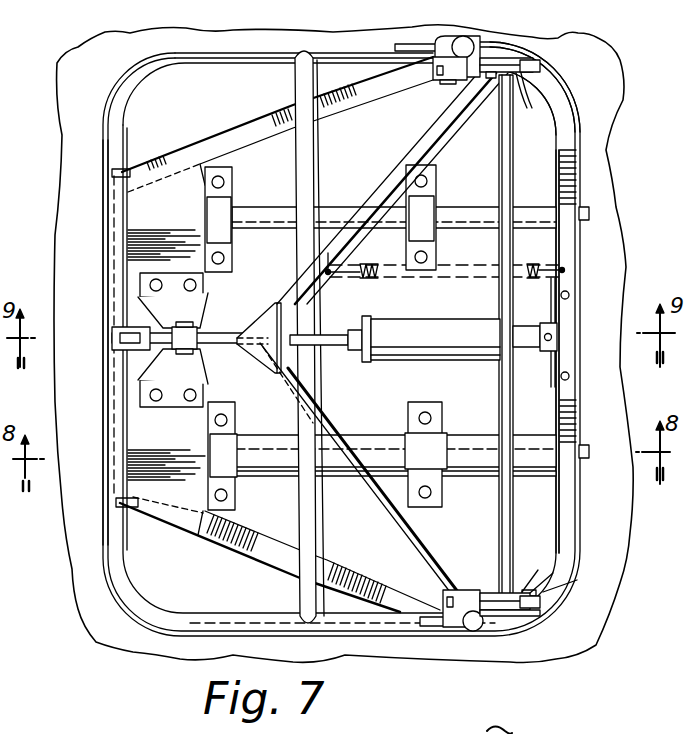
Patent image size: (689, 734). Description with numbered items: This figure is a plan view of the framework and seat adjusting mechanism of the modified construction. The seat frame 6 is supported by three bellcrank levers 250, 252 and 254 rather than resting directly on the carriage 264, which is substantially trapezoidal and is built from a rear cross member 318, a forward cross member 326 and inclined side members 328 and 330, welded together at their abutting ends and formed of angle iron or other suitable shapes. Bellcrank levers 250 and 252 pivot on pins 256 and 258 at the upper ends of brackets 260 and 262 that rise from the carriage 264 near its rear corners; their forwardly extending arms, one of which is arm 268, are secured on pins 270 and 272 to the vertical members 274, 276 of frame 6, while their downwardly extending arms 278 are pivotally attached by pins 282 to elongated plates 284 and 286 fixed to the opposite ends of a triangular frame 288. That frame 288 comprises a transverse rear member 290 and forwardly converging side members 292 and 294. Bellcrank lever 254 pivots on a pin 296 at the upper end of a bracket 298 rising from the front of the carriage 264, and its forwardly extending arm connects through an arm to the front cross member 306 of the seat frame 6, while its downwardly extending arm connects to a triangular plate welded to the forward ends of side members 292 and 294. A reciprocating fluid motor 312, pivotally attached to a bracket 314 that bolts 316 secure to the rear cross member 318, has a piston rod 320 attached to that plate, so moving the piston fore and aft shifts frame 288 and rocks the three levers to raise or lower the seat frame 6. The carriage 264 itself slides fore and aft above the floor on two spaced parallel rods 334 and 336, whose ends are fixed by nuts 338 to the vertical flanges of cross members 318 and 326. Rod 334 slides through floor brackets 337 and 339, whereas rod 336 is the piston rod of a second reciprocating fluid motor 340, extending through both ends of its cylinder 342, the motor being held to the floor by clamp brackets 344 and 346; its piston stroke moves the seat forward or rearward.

The frame 6 is at (136, 614).
The bellcrank lever 250 is at (479, 58).
The bellcrank lever 252 is at (516, 610).
The bellcrank lever 254 is at (203, 330).
The pin 256 is at (490, 80).
The pin 258 is at (496, 593).
The bracket 260 is at (505, 62).
The bracket 262 is at (527, 606).
The carriage 264 is at (566, 108).
The forwardly extending arm 268 is at (483, 624).
The pin 270 is at (440, 84).
The pin 272 is at (447, 588).
The vertical member 274 is at (456, 37).
The vertical member 276 is at (472, 634).
The downwardly extending arm 278 is at (520, 80).
The pin 282 is at (553, 80).
The elongated plate 284 is at (535, 68).
The elongated plate 286 is at (548, 597).
The triangular frame 288 is at (428, 540).
The transverse rear member 290 is at (506, 178).
The side member 292 is at (407, 156).
The side member 294 is at (398, 500).
The pin 296 is at (188, 325).
The bracket 298 is at (157, 308).
The front cross member 306 is at (115, 162).
The reciprocating fluid motor 312 is at (405, 348).
The bracket 314 is at (560, 340).
The bolts 316 is at (570, 295).
The rear cross member 318 is at (573, 523).
The piston rod 320 is at (331, 336).
The forward cross member 326 is at (118, 420).
The inclined side member 328 is at (228, 135).
The inclined side member 330 is at (267, 549).
The rod 334 is at (467, 206).
The rod 336 is at (468, 444).
The bracket 337 is at (226, 190).
The nuts 338 is at (592, 213).
The bracket 339 is at (433, 181).
The reciprocating fluid motor 340 is at (286, 480).
The cylinder 342 is at (379, 443).
The clamp bracket 344 is at (224, 420).
The clamp bracket 346 is at (438, 402).